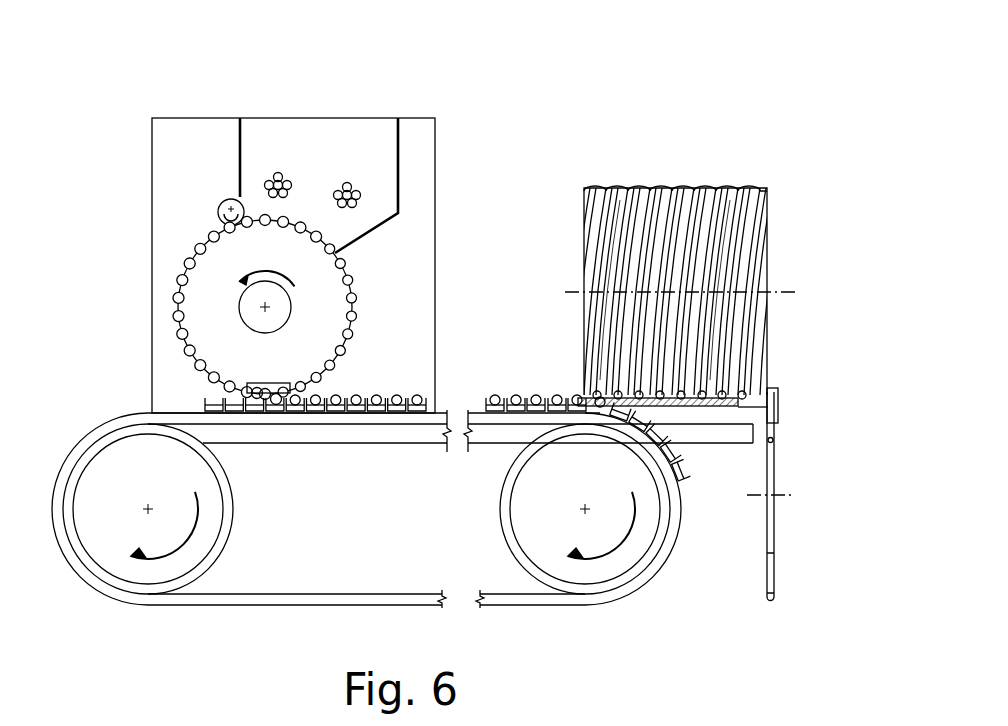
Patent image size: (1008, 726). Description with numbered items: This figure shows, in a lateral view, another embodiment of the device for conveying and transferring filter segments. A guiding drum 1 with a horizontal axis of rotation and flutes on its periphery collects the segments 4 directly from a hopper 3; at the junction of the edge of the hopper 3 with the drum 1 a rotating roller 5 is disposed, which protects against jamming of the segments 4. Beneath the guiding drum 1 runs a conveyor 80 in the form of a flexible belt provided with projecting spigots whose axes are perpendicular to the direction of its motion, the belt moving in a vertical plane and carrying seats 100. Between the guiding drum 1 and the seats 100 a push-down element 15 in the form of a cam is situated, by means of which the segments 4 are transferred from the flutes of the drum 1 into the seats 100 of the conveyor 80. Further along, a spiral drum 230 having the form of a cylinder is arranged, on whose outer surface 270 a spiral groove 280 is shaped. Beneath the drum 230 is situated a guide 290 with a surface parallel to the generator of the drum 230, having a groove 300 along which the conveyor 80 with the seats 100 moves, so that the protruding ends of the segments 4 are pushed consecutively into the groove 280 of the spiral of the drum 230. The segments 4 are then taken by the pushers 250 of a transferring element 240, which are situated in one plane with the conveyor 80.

The guiding drum 1 is at (208, 275).
The hopper 3 is at (352, 145).
The segments 4 is at (276, 175).
The rotating roller 5 is at (226, 200).
The push-down element 15 is at (297, 390).
The conveyor 80 is at (240, 598).
The seats 100 is at (205, 400).
The spiral drum 230 is at (723, 215).
The transferring element 240 is at (772, 537).
The pushers 250 is at (773, 442).
The outer surface 270 is at (653, 186).
The spiral groove 280 is at (610, 212).
The guide 290 is at (738, 393).
The groove 300 is at (672, 407).